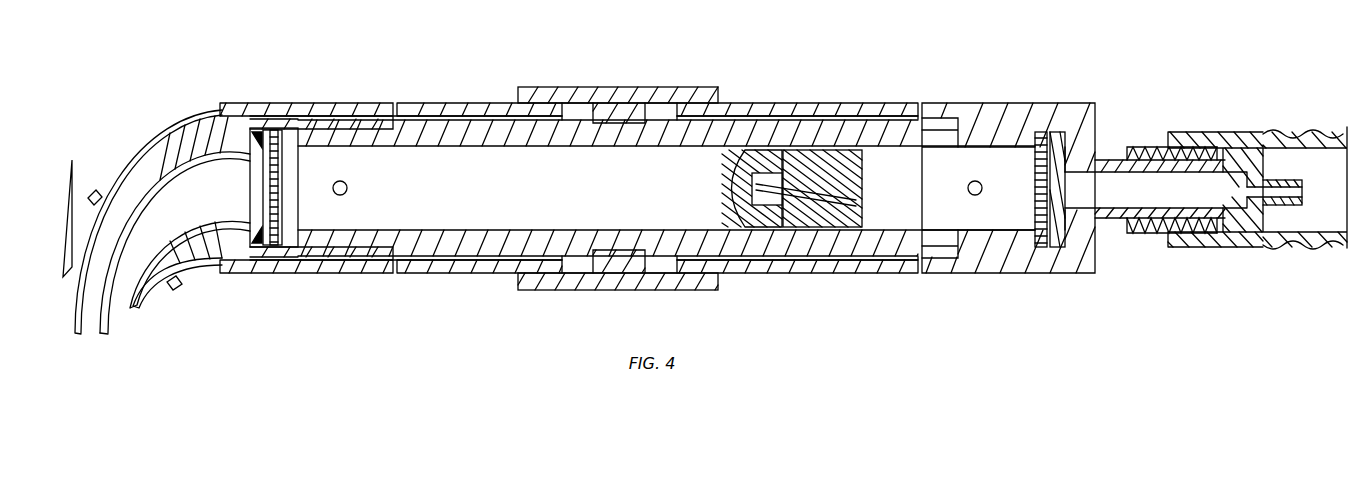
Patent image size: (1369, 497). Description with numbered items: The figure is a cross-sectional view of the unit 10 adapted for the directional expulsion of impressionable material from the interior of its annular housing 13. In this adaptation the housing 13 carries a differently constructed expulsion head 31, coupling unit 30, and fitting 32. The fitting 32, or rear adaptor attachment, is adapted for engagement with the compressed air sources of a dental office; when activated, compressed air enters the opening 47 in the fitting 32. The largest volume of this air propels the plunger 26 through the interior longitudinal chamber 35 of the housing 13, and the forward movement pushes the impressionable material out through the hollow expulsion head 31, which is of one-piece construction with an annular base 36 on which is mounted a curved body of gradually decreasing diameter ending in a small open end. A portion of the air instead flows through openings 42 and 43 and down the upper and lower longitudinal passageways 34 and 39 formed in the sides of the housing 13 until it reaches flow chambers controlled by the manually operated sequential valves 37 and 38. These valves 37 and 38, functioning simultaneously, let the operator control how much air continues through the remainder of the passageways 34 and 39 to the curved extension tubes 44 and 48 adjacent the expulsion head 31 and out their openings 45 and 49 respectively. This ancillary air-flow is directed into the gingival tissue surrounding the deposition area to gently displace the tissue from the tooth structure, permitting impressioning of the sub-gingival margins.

The unit 10 is at (843, 103).
The housing 13 is at (432, 102).
The plunger 26 is at (720, 197).
The coupling unit 30 is at (292, 102).
The expulsion head 31 is at (107, 333).
The fitting 32 is at (1212, 130).
The upper longitudinal passageway 34 is at (467, 118).
The interior longitudinal chamber 35 is at (622, 227).
The annular base 36 is at (257, 240).
The sequential valve 37 is at (628, 85).
The sequential valve 38 is at (562, 290).
The lower longitudinal passageway 39 is at (492, 258).
The opening 42 is at (953, 140).
The opening 43 is at (953, 230).
The curved extension tube 44 is at (157, 140).
The opening 45 is at (74, 209).
The opening 47 is at (1300, 187).
The curved extension tube 48 is at (193, 267).
The opening 49 is at (127, 312).